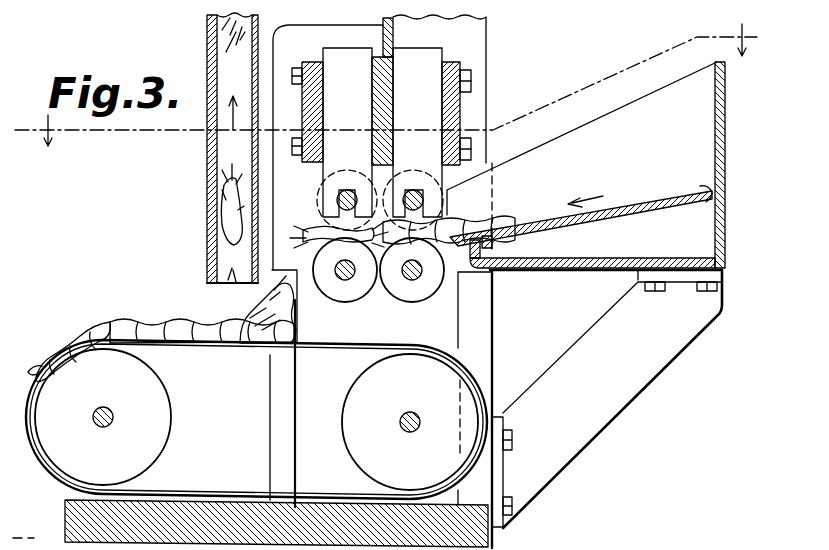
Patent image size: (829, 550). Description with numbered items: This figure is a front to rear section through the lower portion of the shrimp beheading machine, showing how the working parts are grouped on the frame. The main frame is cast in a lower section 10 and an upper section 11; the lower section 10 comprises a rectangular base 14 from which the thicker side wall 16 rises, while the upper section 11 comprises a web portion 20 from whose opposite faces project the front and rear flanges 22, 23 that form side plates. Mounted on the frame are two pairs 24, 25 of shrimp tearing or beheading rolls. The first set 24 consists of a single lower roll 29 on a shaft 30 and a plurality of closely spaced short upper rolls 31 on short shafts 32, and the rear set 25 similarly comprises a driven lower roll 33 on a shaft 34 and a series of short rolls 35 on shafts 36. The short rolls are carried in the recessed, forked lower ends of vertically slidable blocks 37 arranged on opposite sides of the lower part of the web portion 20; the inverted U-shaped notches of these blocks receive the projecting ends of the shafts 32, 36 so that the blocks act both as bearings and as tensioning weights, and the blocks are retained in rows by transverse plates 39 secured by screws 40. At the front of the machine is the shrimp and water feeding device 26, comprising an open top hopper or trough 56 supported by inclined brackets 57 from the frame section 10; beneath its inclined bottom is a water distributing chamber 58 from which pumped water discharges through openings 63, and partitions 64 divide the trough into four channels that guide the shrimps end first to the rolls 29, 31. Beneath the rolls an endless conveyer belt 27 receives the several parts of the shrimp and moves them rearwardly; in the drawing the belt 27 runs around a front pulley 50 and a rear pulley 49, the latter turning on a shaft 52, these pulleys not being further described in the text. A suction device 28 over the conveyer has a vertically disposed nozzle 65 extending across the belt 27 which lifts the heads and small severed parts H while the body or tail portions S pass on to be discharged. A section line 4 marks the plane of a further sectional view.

The section line 4- 4 is at (396, 85).
The lower frame section 10 is at (60, 505).
The upper frame section 11 is at (502, 59).
The rectangular base 14 is at (196, 512).
The side wall 16 is at (250, 462).
The web portion 20 is at (402, 39).
The front flange 22 is at (502, 34).
The rear flange 23 is at (312, 57).
The first set of tearing rolls 24 is at (414, 318).
The second set of tearing rolls 25 is at (346, 316).
The shrimp and water feeding device 26 is at (576, 130).
The endless conveyer belt 27 is at (205, 350).
The suction device 28 is at (206, 160).
The lower roll 29 is at (437, 290).
The shaft 30 is at (406, 285).
The upper rolls 31 is at (430, 224).
The short shafts 32 is at (413, 190).
The driven lower roll 33 is at (328, 286).
The shaft 34 is at (333, 267).
The short rolls 35 is at (309, 195).
The shafts 36 is at (347, 190).
The vertically slidable blocks 37 is at (359, 112).
The transverse plates 39 is at (316, 124).
The screws 40 is at (296, 134).
The belt pulley 49 is at (360, 435).
The belt pulley 50 is at (164, 428).
The pulley shaft 52 is at (404, 414).
The hopper or trough 56 is at (700, 122).
The inclined brackets 57 is at (658, 350).
The water distributing chamber 58 is at (650, 250).
The openings 63 is at (706, 186).
The partitions 64 is at (643, 156).
The suction nozzle 65 is at (219, 262).
The severed heads and small parts H is at (214, 220).
The body or tail portions S is at (174, 318).